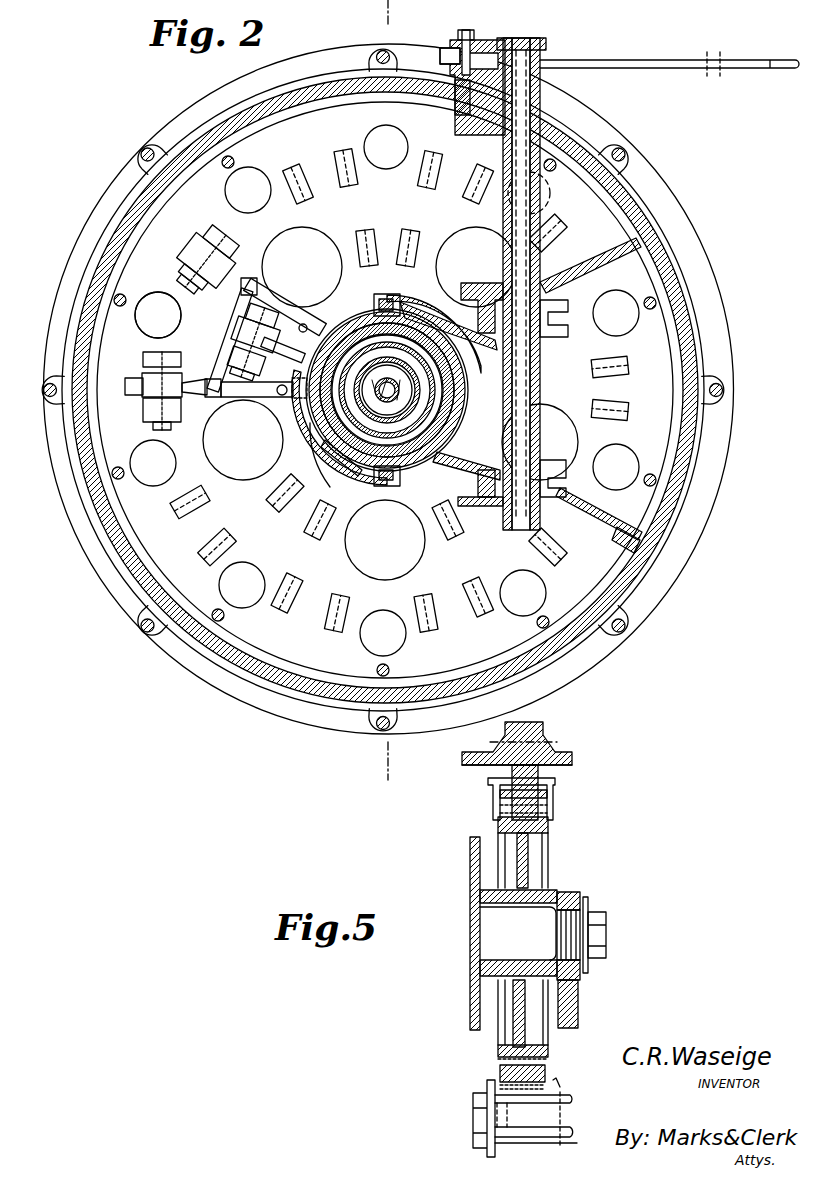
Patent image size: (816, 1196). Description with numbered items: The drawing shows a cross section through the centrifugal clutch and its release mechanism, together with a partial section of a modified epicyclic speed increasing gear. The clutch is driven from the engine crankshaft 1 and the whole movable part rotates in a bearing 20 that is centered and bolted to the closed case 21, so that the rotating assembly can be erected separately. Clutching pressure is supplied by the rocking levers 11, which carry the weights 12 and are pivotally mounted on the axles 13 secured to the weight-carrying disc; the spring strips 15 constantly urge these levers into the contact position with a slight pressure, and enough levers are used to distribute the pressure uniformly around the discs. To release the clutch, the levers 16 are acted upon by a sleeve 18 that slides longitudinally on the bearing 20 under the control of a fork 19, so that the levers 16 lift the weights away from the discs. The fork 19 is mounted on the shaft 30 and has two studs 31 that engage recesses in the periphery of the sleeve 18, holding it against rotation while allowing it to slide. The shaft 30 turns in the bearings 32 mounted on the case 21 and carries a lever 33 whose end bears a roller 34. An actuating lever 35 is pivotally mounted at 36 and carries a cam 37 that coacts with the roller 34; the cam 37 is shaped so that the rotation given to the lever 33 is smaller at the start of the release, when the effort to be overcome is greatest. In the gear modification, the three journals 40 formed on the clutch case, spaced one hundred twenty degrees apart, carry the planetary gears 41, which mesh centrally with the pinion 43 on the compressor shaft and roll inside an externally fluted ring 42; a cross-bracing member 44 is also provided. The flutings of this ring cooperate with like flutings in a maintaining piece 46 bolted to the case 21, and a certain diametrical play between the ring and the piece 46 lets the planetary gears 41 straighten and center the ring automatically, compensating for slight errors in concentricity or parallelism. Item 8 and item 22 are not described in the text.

In FIG. 2, the crankshaft 1 is at (397, 390).
In FIG. 2, the bolts 8 is at (120, 306).
In FIG. 2, the rocking levers 11 is at (250, 280).
In FIG. 2, the weights 12 is at (177, 254).
In FIG. 2, the axles 13 is at (186, 292).
In FIG. 2, the spring strips 15 is at (302, 320).
In FIG. 2, the levers 16 is at (240, 312).
In FIG. 2, the sleeve 18 is at (360, 474).
In FIG. 2, the fork 19 is at (464, 330).
In FIG. 2, the bearing 20 is at (410, 322).
In FIG. 2, the case 21 is at (673, 295).
In FIG. 5, the case 21 is at (545, 748).
In FIG. 2, the hub 22 is at (340, 438).
In FIG. 2, the shaft 30 is at (536, 262).
In FIG. 2, the studs 31 is at (386, 296).
In FIG. 2, the bearings 32 is at (546, 320).
In FIG. 2, the lever 33 is at (495, 50).
In FIG. 2, the roller 34 is at (447, 52).
In FIG. 2, the lever 35 is at (646, 60).
In FIG. 2, the pivot 36 is at (470, 34).
In FIG. 2, the cam 37 is at (450, 64).
In FIG. 5, the journals 40 is at (483, 940).
In FIG. 5, the planetary gears 41 is at (520, 870).
In FIG. 5, the internal tooth ring 42 is at (503, 816).
In FIG. 5, the pinion 43 is at (530, 1115).
In FIG. 5, the cross-bracing member 44 is at (575, 992).
In FIG. 5, the maintaining piece 46 is at (557, 798).